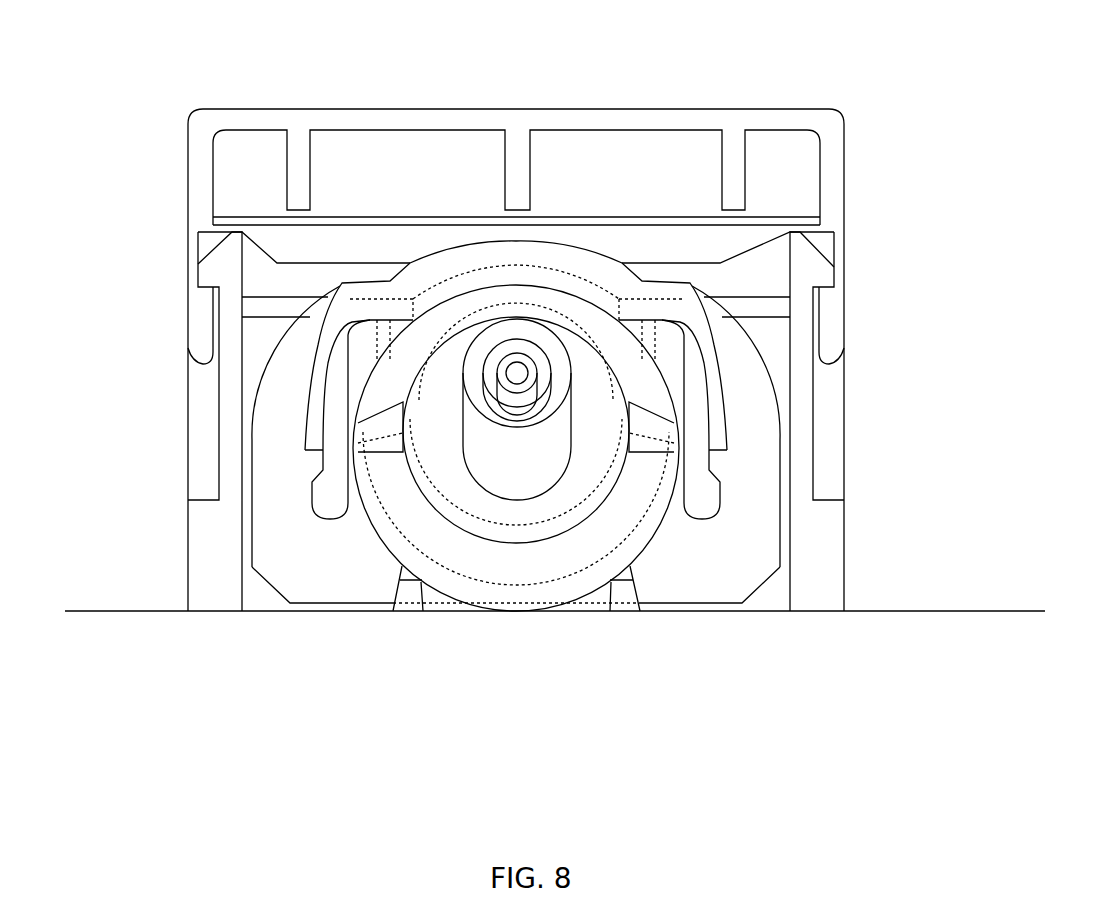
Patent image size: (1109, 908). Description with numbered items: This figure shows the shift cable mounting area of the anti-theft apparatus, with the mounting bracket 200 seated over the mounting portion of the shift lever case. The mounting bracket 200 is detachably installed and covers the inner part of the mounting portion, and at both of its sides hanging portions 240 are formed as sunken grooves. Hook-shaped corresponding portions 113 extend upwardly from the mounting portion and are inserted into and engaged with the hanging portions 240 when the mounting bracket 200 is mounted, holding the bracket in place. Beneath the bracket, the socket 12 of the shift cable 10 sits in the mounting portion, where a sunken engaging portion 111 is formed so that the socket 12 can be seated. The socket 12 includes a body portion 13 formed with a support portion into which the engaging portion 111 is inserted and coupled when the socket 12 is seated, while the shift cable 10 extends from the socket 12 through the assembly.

The mounting bracket 200 is at (485, 102).
The hanging portions 240 is at (826, 247).
The corresponding portions 113 is at (836, 270).
The body portion 13 is at (720, 387).
The socket 12 is at (604, 530).
The shift cable 10 is at (511, 470).
The engaging portion 111 is at (405, 598).